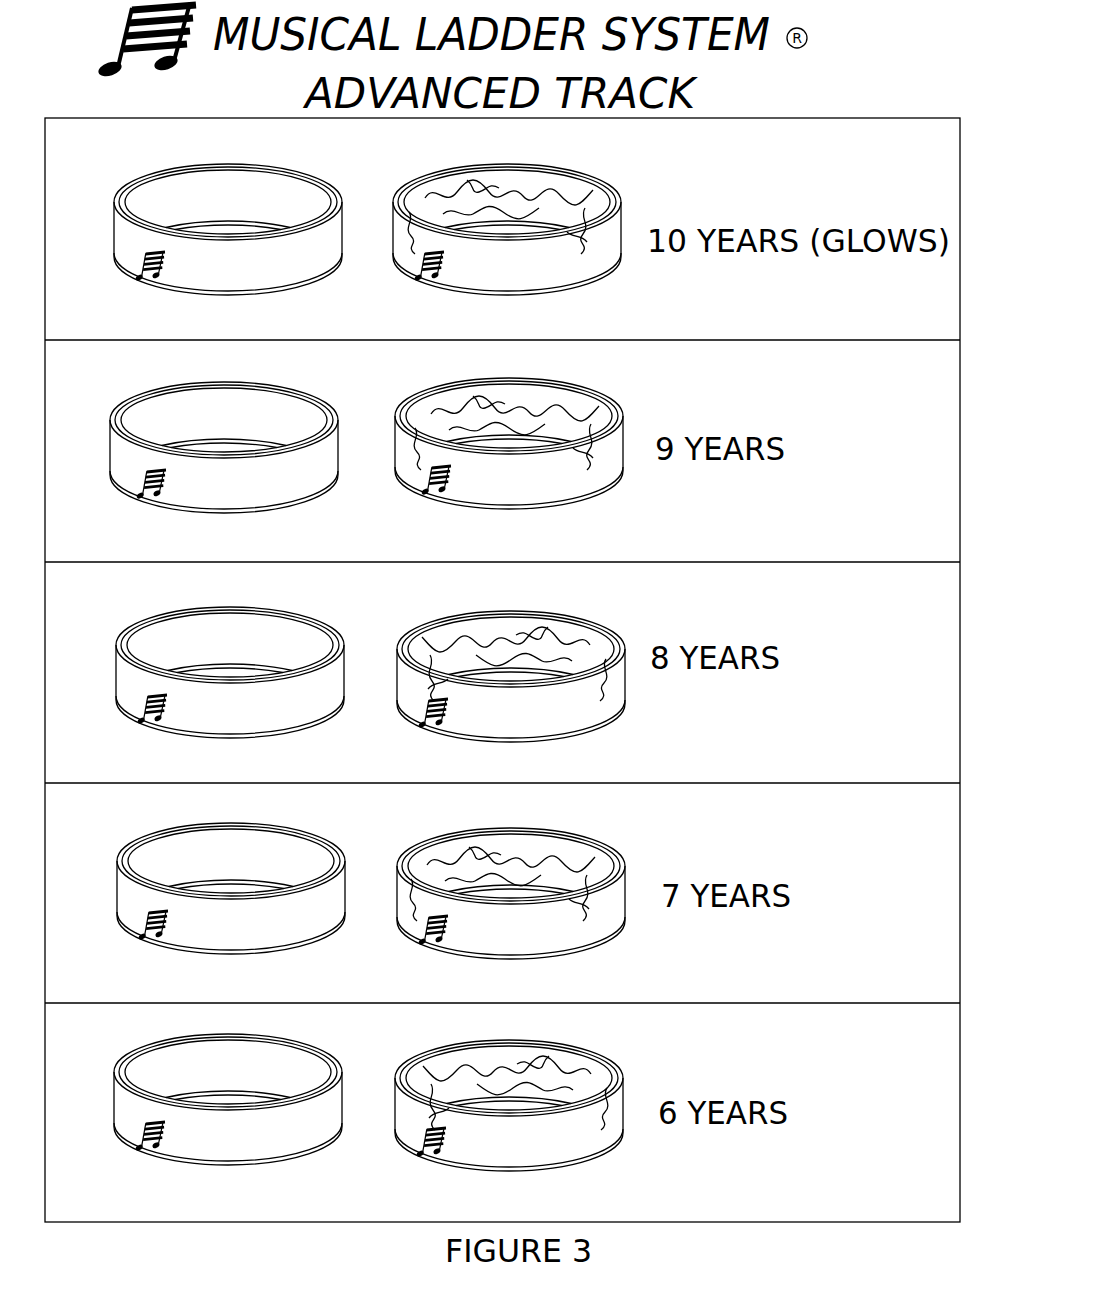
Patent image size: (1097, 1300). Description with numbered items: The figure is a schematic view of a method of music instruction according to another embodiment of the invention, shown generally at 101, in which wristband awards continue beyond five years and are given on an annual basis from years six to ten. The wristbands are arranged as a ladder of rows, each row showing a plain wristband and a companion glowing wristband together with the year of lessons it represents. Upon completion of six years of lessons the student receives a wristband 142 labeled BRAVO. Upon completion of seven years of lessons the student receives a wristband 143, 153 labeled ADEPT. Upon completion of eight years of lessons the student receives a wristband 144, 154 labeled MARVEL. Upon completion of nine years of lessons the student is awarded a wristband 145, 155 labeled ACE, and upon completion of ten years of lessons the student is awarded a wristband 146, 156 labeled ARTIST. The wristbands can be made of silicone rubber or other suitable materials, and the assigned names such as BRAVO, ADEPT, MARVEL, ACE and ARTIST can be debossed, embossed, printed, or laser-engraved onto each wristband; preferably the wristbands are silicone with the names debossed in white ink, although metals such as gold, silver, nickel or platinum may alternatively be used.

The method of music instruction embodiment 101 is at (872, 78).
The wristband labeled BRAVO 142 is at (170, 1072).
The wristband labeled ADEPT 143 is at (167, 855).
The wristband labeled MARVEL 144 is at (170, 655).
The wristband labeled ACE 145 is at (163, 407).
The wristband labeled ARTIST 146 is at (175, 192).
The wristband labeled ADEPT 153 is at (587, 845).
The wristband labeled MARVEL 154 is at (585, 624).
The wristband labeled ACE 155 is at (595, 393).
The wristband labeled ARTIST 156 is at (575, 188).